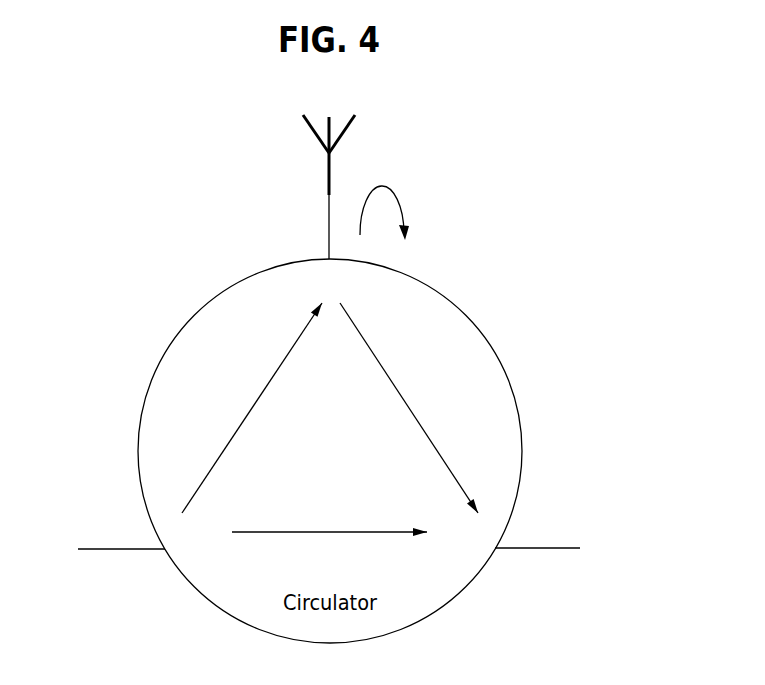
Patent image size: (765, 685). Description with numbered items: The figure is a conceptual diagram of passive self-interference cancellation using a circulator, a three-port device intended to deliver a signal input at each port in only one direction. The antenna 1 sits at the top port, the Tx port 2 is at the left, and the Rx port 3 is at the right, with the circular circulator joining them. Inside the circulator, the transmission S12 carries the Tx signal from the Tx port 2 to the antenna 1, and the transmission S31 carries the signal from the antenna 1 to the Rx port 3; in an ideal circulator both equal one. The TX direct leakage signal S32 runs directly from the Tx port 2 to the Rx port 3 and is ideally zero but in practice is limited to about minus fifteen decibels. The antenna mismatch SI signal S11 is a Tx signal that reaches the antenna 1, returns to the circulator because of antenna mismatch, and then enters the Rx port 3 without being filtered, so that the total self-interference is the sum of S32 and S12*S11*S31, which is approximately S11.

The antenna 1 is at (283, 187).
The transmitter (TX) port 2 is at (98, 543).
The receiver (RX) port 3 is at (561, 544).
The antenna mismatch SI signal S11 is at (415, 213).
The transmission from Tx port to antenna S12 is at (252, 408).
The transmission from antenna to Rx port S31 is at (409, 408).
The TX direct leakage signal S32 is at (329, 516).